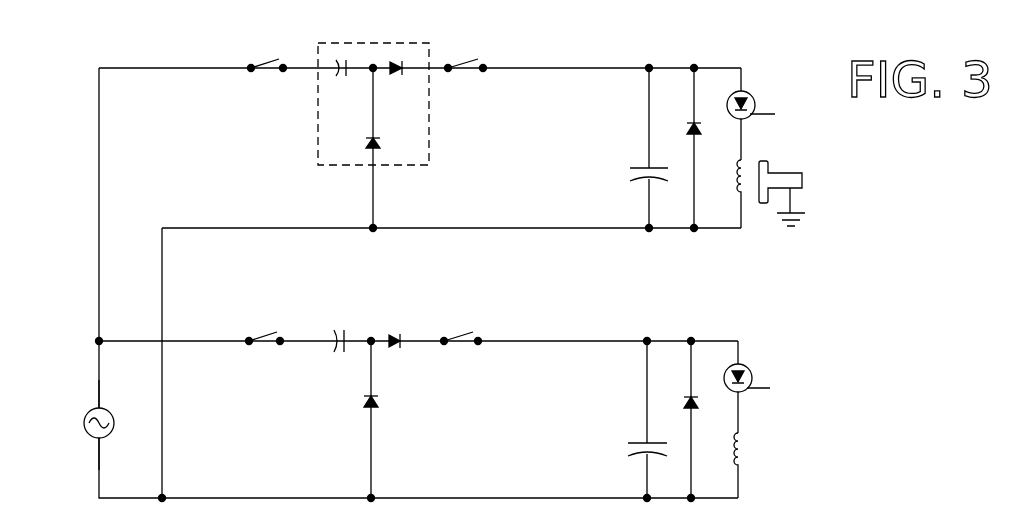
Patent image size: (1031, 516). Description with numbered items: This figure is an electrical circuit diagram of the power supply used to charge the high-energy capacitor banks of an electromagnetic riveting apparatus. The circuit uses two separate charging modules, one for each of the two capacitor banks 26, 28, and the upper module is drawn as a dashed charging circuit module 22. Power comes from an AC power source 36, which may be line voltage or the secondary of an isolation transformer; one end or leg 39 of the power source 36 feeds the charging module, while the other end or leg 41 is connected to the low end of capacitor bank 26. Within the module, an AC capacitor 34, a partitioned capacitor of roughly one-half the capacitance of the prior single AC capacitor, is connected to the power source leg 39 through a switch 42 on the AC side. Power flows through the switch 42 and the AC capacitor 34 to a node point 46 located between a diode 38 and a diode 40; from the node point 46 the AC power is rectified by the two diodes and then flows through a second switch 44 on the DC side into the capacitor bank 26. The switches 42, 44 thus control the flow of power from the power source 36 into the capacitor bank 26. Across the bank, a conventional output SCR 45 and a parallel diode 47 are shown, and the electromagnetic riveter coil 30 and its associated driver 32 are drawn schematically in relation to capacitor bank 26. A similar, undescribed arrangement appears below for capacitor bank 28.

The charging circuit module 22 is at (429, 52).
The capacitor bank 26 is at (642, 163).
The capacitor bank 28 is at (637, 438).
The electromagnetic riveter coil 30 is at (742, 192).
The driver 32 is at (788, 173).
The AC capacitor 34 is at (337, 73).
The power source 36 is at (108, 413).
The diode 38 is at (379, 143).
The leg of power source 39 is at (95, 402).
The diode 40 is at (397, 76).
The leg of power source 41 is at (97, 440).
The switch 42 is at (268, 71).
The switch 44 is at (467, 75).
The output SCR 45 is at (752, 97).
The node point 46 is at (367, 73).
The parallel diode 47 is at (688, 125).